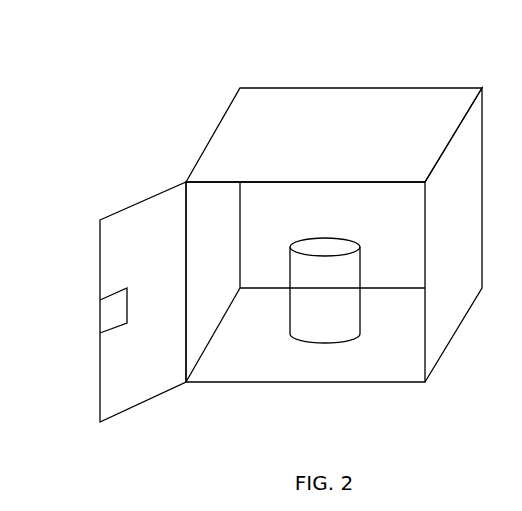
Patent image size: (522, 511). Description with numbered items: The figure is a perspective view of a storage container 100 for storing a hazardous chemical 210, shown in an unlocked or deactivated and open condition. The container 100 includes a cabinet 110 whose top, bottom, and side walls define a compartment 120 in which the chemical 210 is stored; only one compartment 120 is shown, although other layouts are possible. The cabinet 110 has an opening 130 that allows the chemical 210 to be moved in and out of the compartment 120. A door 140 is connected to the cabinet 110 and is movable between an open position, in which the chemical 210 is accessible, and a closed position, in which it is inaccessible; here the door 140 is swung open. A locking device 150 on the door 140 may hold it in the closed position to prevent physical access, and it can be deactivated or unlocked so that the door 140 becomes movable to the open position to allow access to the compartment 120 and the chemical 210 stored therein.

The storage container 100 is at (374, 64).
The cabinet 110 is at (225, 125).
The compartment 120 is at (267, 338).
The opening 130 is at (313, 190).
The door 140 is at (128, 220).
The locking device 150 is at (104, 320).
The hazardous chemical 210 is at (344, 302).